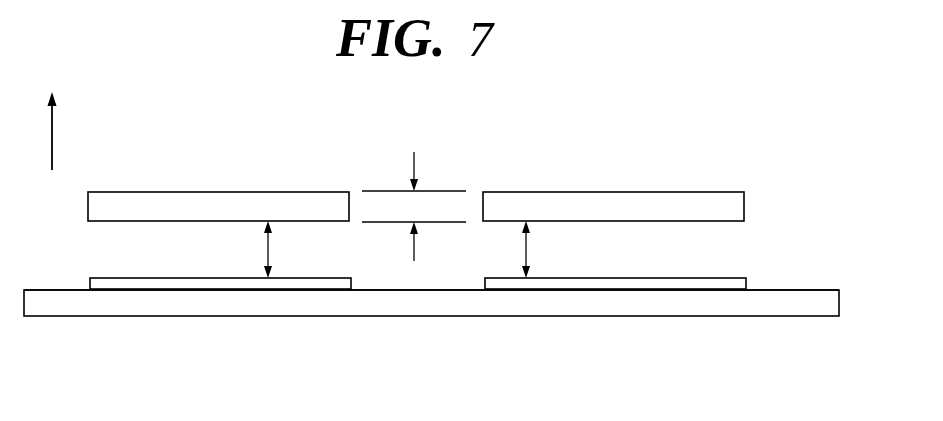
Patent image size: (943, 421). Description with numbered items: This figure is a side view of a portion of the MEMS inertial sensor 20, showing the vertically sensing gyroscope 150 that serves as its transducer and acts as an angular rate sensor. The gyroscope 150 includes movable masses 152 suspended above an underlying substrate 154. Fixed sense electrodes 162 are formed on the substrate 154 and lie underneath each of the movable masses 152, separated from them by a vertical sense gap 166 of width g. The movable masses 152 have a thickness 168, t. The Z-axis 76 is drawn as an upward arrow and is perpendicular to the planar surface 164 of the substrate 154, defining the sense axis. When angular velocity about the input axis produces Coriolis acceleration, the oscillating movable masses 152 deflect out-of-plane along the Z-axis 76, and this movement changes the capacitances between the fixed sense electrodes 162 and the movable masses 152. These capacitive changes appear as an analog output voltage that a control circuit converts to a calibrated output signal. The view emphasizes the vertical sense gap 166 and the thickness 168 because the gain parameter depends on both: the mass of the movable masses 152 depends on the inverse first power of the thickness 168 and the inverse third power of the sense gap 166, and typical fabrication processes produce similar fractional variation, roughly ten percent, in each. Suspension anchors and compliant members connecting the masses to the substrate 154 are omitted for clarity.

The vertically sensing gyroscope 150 is at (578, 122).
The movable masses 152 is at (190, 191).
The fixed sense electrodes 162 is at (196, 282).
The substrate 154 is at (205, 310).
The planar surface 164 is at (68, 287).
The vertical sense gap 166 is at (268, 255).
The thickness 168 is at (418, 166).
The Z-axis 76 is at (52, 148).
The MEMS inertial sensor 20 is at (621, 403).